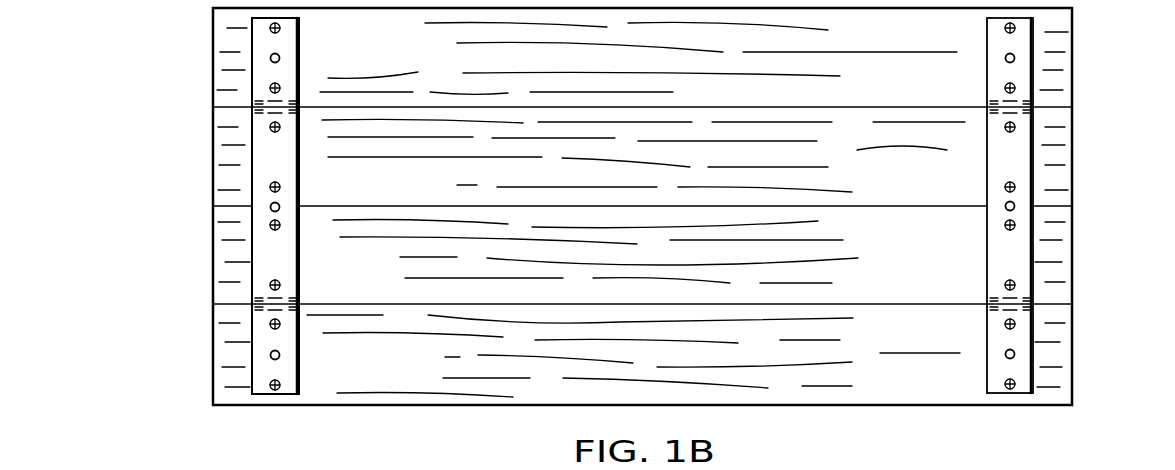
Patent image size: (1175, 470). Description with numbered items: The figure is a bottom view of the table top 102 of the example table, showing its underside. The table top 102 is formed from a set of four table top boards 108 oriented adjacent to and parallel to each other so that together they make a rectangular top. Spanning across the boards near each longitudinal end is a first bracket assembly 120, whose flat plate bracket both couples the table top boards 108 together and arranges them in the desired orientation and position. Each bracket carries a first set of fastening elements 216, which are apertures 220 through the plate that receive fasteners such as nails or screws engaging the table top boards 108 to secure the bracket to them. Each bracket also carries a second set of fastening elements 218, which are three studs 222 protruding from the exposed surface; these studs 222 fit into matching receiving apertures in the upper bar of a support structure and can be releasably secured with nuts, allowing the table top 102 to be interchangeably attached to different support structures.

The table top 102 is at (152, 147).
The table top boards 108 is at (1073, 57).
The first bracket assembly 120 is at (301, 250).
The first set of fastening elements 216 is at (940, 204).
The apertures 220 is at (1004, 30).
The second set of fastening elements 218 is at (346, 206).
The studs 222 is at (281, 58).